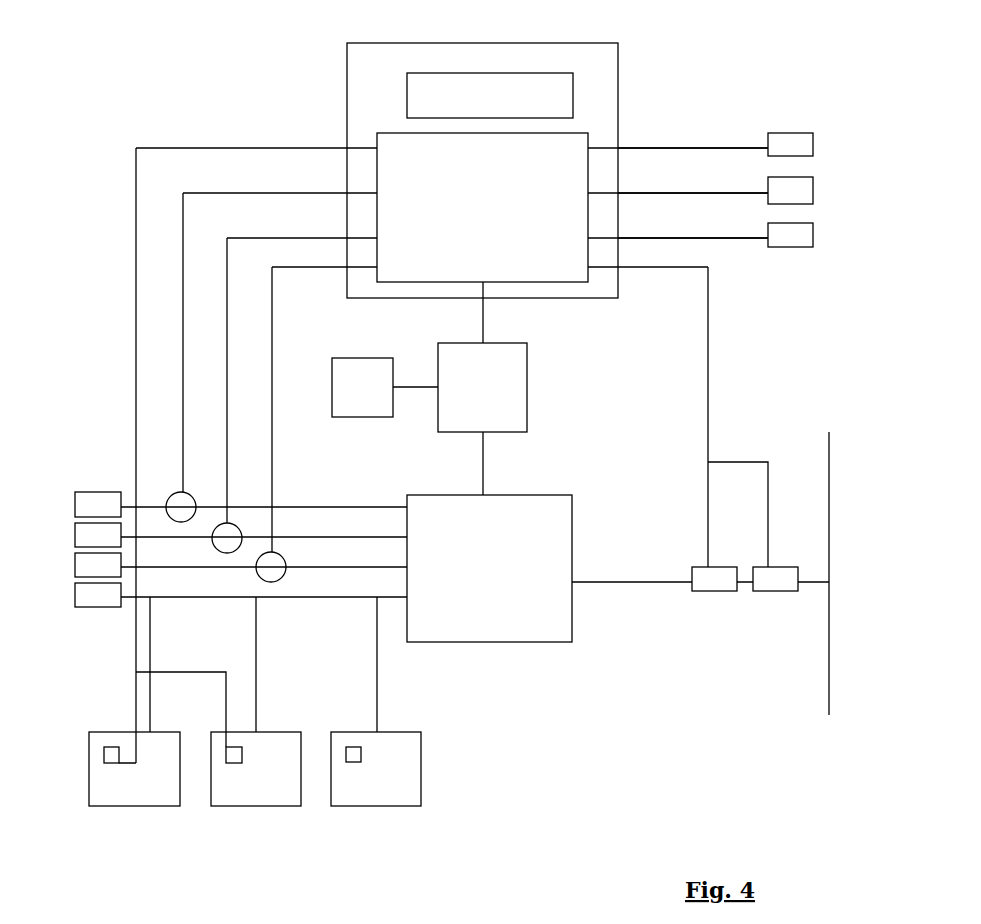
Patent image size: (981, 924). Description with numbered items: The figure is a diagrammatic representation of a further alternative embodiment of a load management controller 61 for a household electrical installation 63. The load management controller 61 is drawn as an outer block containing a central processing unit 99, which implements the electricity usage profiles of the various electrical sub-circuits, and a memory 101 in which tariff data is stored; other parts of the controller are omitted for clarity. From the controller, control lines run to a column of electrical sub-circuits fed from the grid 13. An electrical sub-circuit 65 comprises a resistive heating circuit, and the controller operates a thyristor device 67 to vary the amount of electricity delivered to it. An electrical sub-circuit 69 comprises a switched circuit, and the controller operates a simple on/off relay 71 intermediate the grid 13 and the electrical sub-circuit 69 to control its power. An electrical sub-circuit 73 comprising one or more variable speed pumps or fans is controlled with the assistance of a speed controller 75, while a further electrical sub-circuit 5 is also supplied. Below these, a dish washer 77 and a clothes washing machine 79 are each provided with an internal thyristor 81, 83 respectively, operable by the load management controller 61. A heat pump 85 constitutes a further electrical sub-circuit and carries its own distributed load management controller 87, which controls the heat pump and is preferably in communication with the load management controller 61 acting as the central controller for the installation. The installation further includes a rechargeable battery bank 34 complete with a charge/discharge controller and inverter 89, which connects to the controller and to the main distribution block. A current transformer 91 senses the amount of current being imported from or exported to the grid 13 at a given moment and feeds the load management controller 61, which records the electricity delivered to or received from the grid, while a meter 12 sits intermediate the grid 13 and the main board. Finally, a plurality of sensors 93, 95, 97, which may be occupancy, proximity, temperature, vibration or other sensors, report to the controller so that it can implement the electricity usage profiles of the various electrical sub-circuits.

The electrical sub-circuit 5 is at (105, 602).
The meter 12 is at (783, 582).
The electricity power supply 13 is at (829, 677).
The rechargeable static battery bank 34 is at (362, 387).
The load management controller 61 is at (317, 92).
The household electrical installation 63 is at (694, 73).
The electrical sub-circuit 65 is at (105, 497).
The thyristor device 67 is at (178, 505).
The electrical sub-circuit 69 is at (77, 543).
The on/off relay 71 is at (227, 538).
The electrical sub-circuit 73 is at (90, 571).
The speed controller 75 is at (272, 567).
The dish washer 77 is at (165, 806).
The clothes washing machine 79 is at (285, 806).
The internal thyristor 81 is at (119, 763).
The internal thyristor 83 is at (232, 763).
The heat pump 85 is at (376, 790).
The distributed load management controller 87 is at (361, 760).
The charge/discharge controller and inverter 89 is at (482, 387).
The current transformer 91 is at (708, 582).
The sensor 93 is at (797, 148).
The sensor 95 is at (813, 193).
The sensor 97 is at (797, 238).
The central processing unit 99 is at (482, 207).
The memory 101 is at (490, 95).